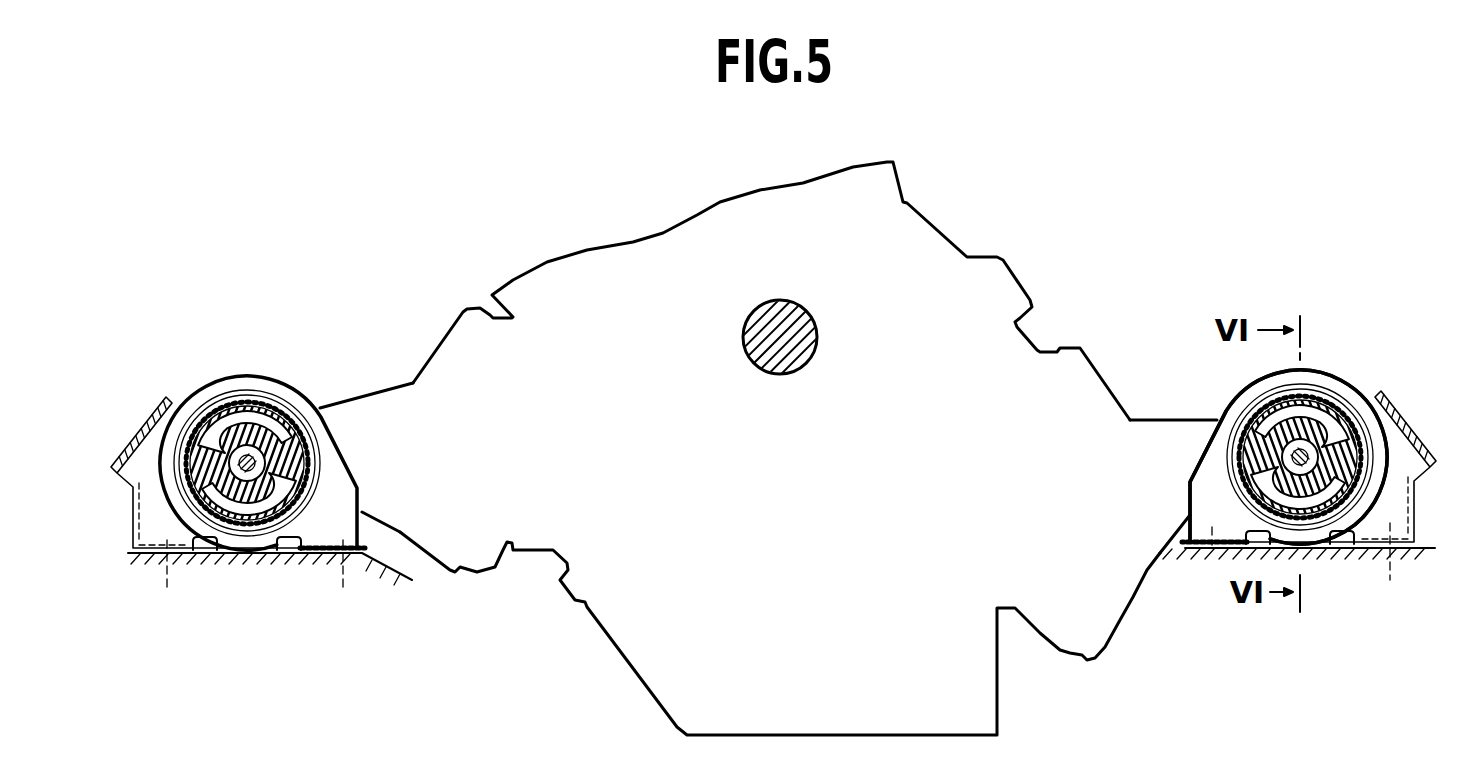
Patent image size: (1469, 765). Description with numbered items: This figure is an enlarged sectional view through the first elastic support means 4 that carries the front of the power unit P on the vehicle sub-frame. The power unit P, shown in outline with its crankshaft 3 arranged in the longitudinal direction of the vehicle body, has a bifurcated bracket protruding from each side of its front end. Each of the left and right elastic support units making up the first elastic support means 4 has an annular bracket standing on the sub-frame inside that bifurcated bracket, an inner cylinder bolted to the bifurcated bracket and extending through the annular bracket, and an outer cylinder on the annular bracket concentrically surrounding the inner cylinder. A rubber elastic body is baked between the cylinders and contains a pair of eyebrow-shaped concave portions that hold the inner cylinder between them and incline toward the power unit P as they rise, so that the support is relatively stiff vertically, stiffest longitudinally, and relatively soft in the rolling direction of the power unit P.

The power unit P is at (967, 203).
The crankshaft 3 is at (800, 342).
The first elastic support means 4 is at (1333, 353).